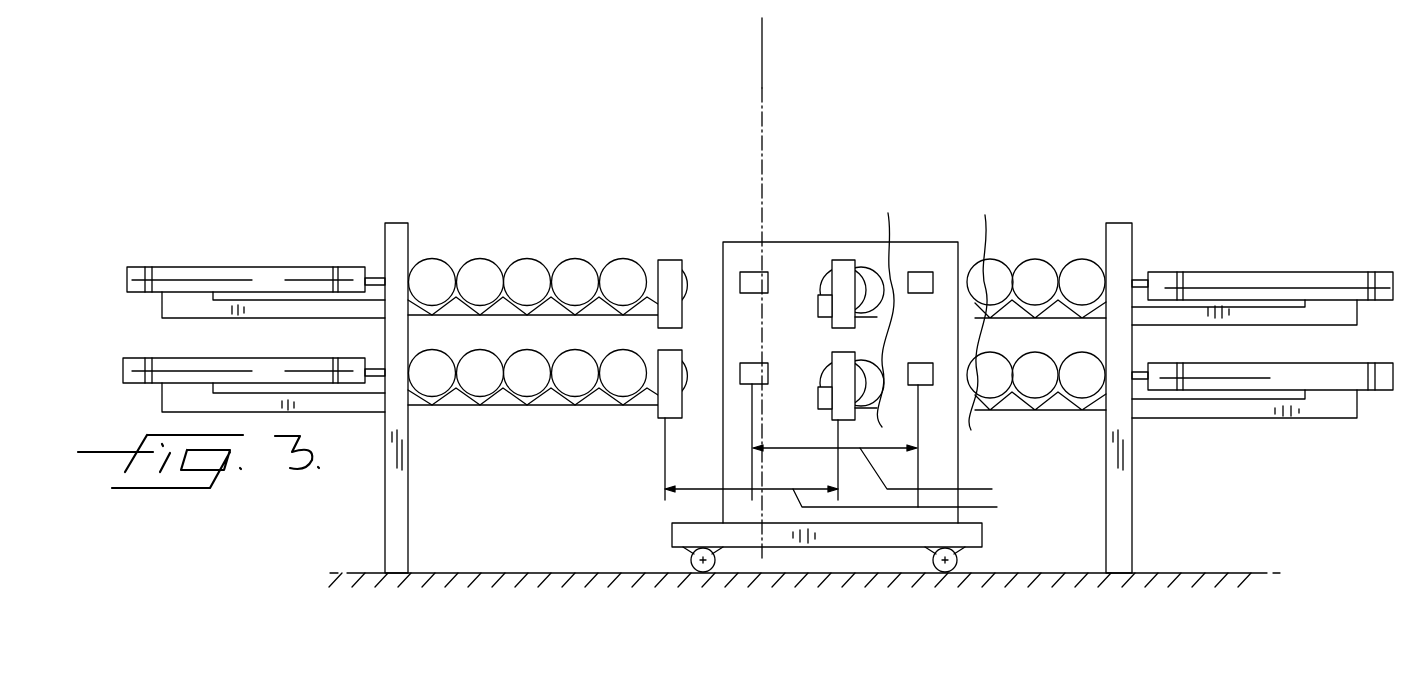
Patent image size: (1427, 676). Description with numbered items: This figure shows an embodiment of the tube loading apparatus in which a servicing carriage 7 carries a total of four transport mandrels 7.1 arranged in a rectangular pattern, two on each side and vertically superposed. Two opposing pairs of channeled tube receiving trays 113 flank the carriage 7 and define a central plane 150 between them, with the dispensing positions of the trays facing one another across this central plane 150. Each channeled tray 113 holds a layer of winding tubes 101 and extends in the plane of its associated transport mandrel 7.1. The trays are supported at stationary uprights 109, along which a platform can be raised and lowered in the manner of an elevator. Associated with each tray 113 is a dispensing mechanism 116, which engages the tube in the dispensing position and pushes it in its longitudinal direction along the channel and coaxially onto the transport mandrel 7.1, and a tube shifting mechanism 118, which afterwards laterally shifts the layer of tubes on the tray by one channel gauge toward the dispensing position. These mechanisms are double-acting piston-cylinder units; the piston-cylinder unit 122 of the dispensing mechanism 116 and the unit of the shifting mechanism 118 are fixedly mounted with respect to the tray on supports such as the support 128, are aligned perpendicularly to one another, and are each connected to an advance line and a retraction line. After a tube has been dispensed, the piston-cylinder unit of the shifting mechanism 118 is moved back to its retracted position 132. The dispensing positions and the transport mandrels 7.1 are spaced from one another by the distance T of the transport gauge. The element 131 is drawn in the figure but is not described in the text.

The servicing carriage 7 is at (737, 241).
The transport mandrel 7.1 is at (925, 276).
The winding tube 101 is at (443, 265).
The stationary upright 109 is at (410, 236).
The channeled tube receiving tray 113 is at (497, 404).
The dispensing mechanism 116 is at (652, 222).
The tube shifting mechanism 118 is at (193, 270).
The piston-cylinder unit 122 is at (667, 403).
The support 128 is at (172, 316).
The piston rod 131 is at (304, 272).
The retracted position 132 is at (123, 268).
The central plane 150 is at (765, 82).